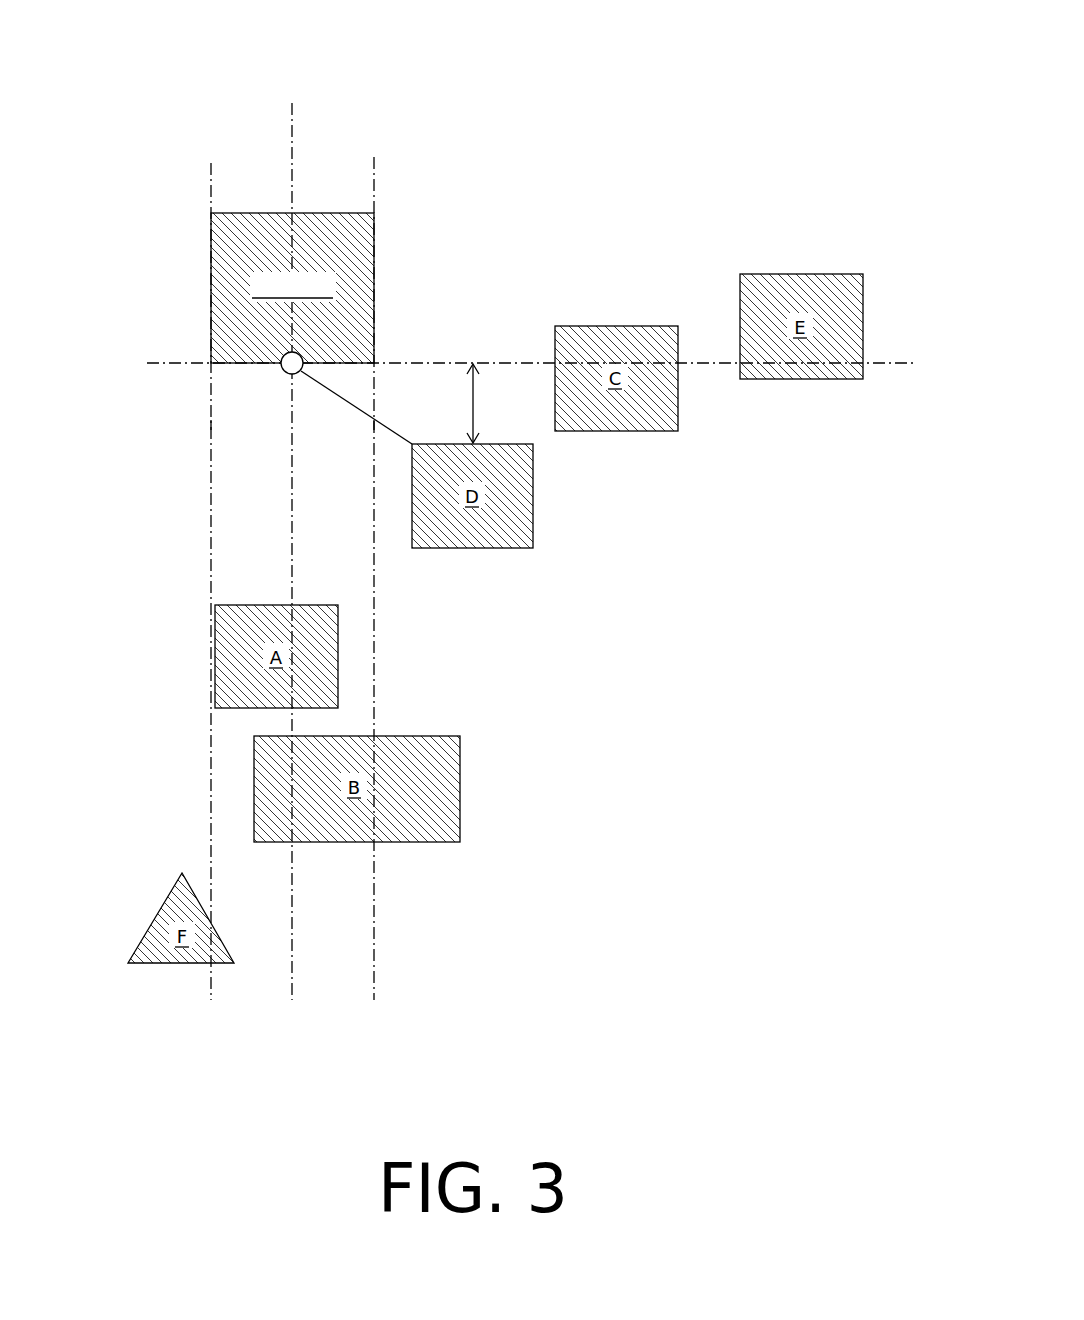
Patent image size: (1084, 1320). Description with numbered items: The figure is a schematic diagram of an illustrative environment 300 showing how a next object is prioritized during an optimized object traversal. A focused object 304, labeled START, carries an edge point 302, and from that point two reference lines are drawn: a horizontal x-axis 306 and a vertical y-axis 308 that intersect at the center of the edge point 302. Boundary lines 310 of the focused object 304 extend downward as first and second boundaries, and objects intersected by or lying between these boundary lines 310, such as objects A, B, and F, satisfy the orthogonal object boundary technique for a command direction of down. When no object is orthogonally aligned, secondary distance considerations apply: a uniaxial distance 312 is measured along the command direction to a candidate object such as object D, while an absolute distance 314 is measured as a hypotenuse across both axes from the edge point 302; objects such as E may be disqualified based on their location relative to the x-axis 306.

The environment 300 is at (778, 45).
The edge point 302 is at (304, 352).
The focused object 304 is at (333, 213).
The x-axis 306 is at (910, 362).
The y-axis 308 is at (292, 122).
The boundary lines 310 is at (177, 424).
The uniaxial distance 312 is at (473, 400).
The absolute distance 314 is at (389, 427).